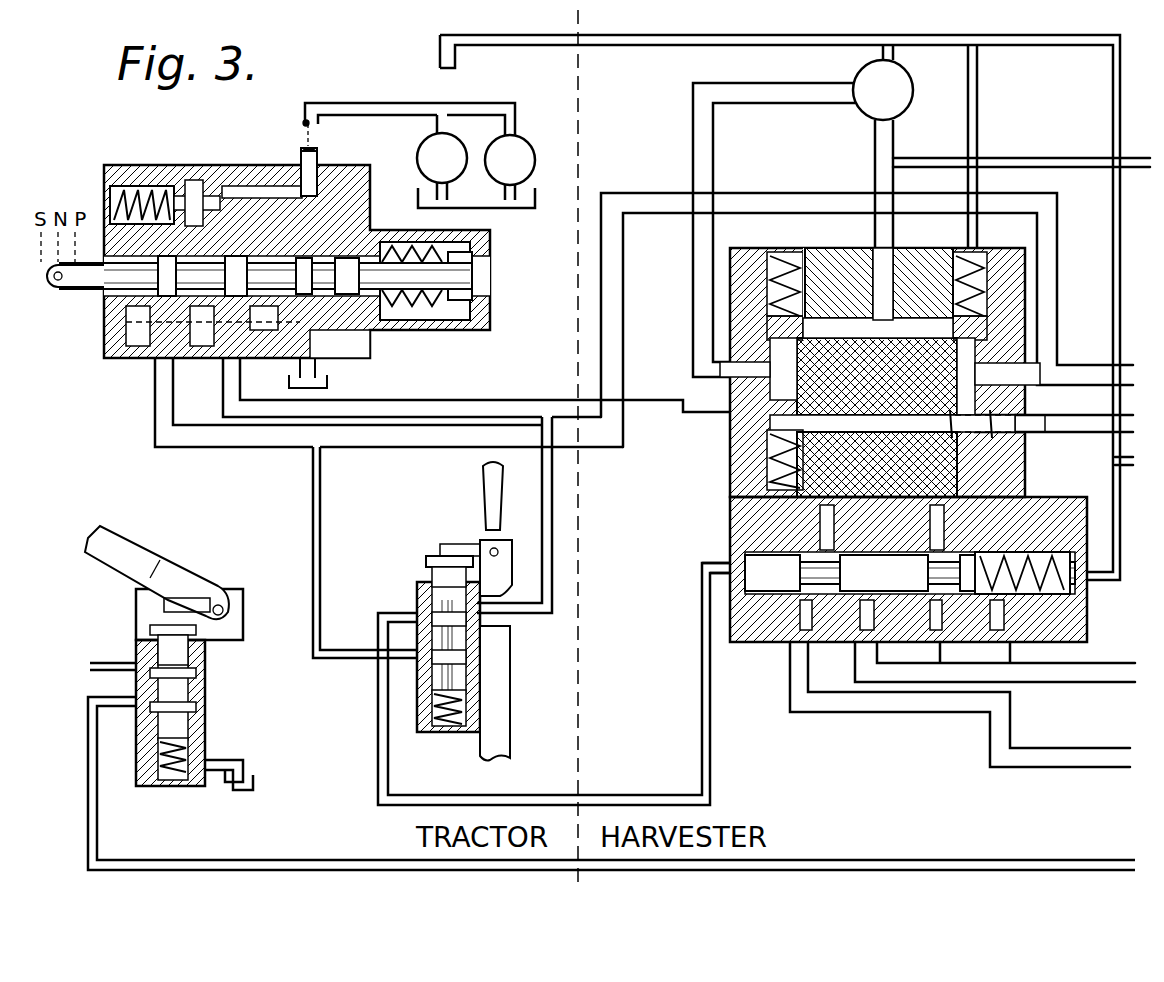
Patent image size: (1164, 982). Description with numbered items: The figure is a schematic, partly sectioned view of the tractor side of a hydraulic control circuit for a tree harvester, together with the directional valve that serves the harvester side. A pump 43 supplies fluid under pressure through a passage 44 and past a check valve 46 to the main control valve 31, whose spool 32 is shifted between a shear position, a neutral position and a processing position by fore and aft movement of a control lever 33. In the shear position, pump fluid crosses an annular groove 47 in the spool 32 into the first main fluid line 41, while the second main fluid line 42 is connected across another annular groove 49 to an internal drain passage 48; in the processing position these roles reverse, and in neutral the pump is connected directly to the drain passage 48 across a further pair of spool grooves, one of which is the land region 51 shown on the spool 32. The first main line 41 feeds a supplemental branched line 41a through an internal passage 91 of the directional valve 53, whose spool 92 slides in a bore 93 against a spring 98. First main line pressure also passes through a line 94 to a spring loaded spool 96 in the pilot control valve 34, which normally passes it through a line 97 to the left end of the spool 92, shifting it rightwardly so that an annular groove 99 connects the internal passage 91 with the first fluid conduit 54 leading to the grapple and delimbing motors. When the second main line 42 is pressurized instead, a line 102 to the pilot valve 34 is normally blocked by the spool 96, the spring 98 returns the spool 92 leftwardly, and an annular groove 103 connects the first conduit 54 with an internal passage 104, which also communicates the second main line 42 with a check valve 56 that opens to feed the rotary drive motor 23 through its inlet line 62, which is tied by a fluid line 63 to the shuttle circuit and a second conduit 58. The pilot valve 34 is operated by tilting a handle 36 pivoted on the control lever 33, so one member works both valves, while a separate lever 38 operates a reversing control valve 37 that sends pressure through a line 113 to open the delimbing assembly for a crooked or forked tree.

The rotary drive motor 23 is at (904, 82).
The control valve 31 is at (294, 256).
The spool 32 is at (266, 261).
The control lever 33 is at (504, 716).
The pilot control valve 34 is at (444, 611).
The handle 36 is at (486, 486).
The reversing control valve 37 is at (147, 651).
The lever 38 is at (112, 542).
The first main fluid line 41 is at (434, 400).
The supplemental branched line 41a is at (1090, 416).
The second main fluid line 42 is at (256, 436).
The pump 43 is at (524, 146).
The passage 44 is at (294, 170).
The check valve 46 is at (236, 166).
The annular groove 47 is at (238, 262).
The internal drain passage 48 is at (128, 340).
The annular groove 49 is at (100, 294).
The spool land 51 is at (302, 262).
The directional valve 53 is at (926, 466).
The first fluid conduit 54 is at (1094, 686).
The check valve 56 is at (940, 300).
The second conduit 58 is at (996, 738).
The inlet line 62 is at (874, 166).
The fluid line 63 is at (1078, 156).
The internal passage 91 is at (898, 418).
The spool 92 is at (880, 542).
The bore 93 is at (740, 544).
The line 94 is at (552, 526).
The spring loaded spool 96 is at (426, 572).
The line 97 is at (384, 768).
The spring 98 is at (1070, 598).
The annular groove 99 is at (790, 548).
The line 102 is at (316, 532).
The annular groove 103 is at (946, 542).
The internal passage 104 is at (975, 476).
The line 113 is at (396, 856).